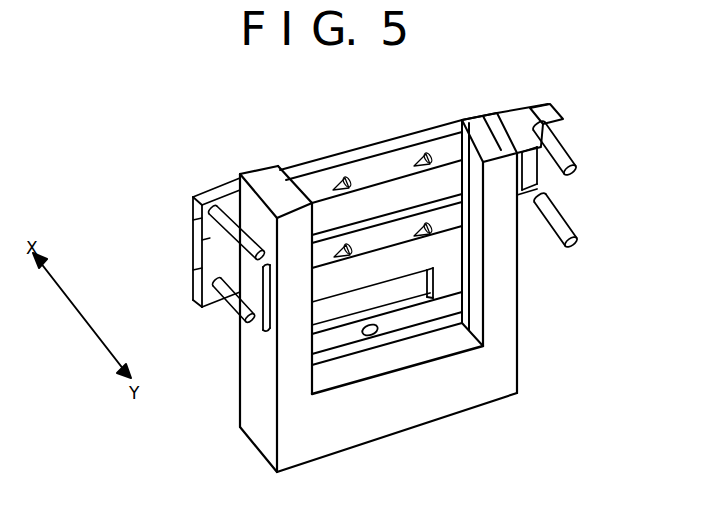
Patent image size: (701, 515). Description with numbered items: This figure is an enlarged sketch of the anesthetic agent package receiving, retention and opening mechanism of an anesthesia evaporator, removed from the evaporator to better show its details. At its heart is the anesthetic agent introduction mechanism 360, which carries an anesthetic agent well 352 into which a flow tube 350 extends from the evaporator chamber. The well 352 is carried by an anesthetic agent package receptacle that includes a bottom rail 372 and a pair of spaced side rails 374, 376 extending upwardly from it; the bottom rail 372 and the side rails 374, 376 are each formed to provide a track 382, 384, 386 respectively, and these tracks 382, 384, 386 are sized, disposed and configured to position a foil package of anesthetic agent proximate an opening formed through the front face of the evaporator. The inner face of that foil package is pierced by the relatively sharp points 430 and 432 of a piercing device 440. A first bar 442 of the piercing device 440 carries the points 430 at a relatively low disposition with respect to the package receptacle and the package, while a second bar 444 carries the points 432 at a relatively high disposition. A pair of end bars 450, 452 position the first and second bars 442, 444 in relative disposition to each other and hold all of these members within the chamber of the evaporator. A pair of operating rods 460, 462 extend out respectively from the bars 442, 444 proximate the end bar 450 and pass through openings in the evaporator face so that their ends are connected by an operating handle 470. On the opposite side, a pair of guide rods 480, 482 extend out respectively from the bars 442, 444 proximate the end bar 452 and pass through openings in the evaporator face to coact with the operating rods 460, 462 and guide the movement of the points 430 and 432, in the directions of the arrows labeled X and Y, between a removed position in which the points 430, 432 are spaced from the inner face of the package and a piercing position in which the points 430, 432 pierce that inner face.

The flow tube 350 is at (377, 336).
The anesthetic agent well 352 is at (432, 290).
The anesthetic agent introduction mechanism 360 is at (541, 68).
The bottom rail 372 is at (495, 383).
The side rail 374 is at (502, 275).
The side rail 376 is at (285, 365).
The track 382 is at (333, 368).
The track 384 is at (532, 107).
The track 386 is at (285, 190).
The points 430 is at (421, 232).
The points 432 is at (422, 160).
The piercing device 440 is at (218, 172).
The first bar 442 is at (413, 238).
The second bar 444 is at (447, 127).
The end bar 450 is at (200, 252).
The end bar 452 is at (550, 173).
The operating rod 460 is at (238, 310).
The operating rod 462 is at (228, 200).
The operating handle 470 is at (253, 342).
The guide rod 480 is at (575, 237).
The guide rod 482 is at (562, 150).